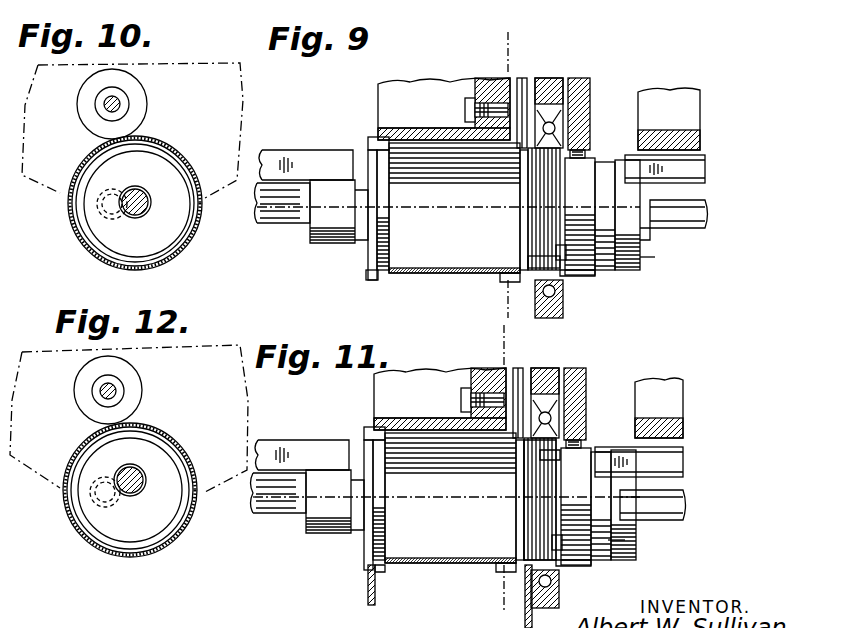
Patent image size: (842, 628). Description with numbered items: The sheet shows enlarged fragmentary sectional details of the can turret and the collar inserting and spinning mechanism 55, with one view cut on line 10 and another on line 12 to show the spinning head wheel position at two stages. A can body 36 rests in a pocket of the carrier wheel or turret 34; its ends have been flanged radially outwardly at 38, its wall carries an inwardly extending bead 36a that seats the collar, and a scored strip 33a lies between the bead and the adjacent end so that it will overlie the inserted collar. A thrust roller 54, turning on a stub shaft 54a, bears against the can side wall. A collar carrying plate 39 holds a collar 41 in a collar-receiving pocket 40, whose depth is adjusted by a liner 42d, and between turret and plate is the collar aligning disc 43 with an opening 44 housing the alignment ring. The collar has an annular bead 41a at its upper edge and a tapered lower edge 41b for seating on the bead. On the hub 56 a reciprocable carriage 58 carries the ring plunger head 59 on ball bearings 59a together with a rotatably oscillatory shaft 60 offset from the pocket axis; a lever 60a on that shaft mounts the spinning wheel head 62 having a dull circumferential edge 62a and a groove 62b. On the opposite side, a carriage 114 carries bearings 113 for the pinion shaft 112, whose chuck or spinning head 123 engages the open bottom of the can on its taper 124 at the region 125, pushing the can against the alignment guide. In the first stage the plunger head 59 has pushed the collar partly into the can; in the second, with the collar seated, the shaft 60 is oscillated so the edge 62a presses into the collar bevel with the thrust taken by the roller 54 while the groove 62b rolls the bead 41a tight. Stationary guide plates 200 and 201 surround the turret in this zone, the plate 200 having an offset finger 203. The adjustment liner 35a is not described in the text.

In FIG. 9, the section line 10 is at (474, 50).
In FIG. 11, the section line 12 is at (472, 343).
In FIG. 9, the scored strip 33a is at (454, 165).
In FIG. 10, the carrier wheel or turret 34 is at (243, 103).
In FIG. 12, the carrier wheel or turret 34 is at (246, 402).
In FIG. 9, the carrier wheel or turret 34 is at (503, 78).
In FIG. 11, the carrier wheel or turret 34 is at (499, 368).
In FIG. 9, the liner 35a is at (402, 135).
In FIG. 11, the liner 35a is at (418, 425).
In FIG. 10, the can body 36 is at (185, 247).
In FIG. 12, the can body 36 is at (190, 522).
In FIG. 9, the can body 36 is at (426, 274).
In FIG. 11, the can body 36 is at (422, 565).
In FIG. 9, the inwardly extending bead 36a is at (505, 282).
In FIG. 11, the inwardly extending bead 36a is at (503, 572).
In FIG. 9, the flanged end 38 is at (378, 280).
In FIG. 9, the collar carrying plate 39 is at (578, 80).
In FIG. 11, the collar carrying plate 39 is at (578, 368).
In FIG. 9, the collar-receiving pocket 40 is at (585, 152).
In FIG. 9, the collar 41 is at (565, 275).
In FIG. 9, the annular bead 41a is at (600, 165).
In FIG. 11, the annular bead 41a is at (540, 455).
In FIG. 9, the tapered lower edge 41b is at (560, 250).
In FIG. 11, the tapered lower edge 41b is at (528, 543).
In FIG. 9, the liner 42d is at (585, 150).
In FIG. 11, the liner 42d is at (588, 422).
In FIG. 9, the collar aligning disc 43 is at (548, 80).
In FIG. 11, the collar aligning disc 43 is at (548, 368).
In FIG. 9, the opening 44 is at (563, 315).
In FIG. 11, the opening 44 is at (560, 605).
In FIG. 10, the thrust roller 54 is at (137, 92).
In FIG. 12, the thrust roller 54 is at (130, 378).
In FIG. 9, the thrust roller 54 is at (522, 80).
In FIG. 11, the thrust roller 54 is at (520, 368).
In FIG. 10, the stub shaft 54a is at (120, 106).
In FIG. 12, the stub shaft 54a is at (118, 394).
In FIG. 9, the stub shaft 54a is at (466, 110).
In FIG. 9, the collar inserting and spinning mechanism 55 is at (641, 257).
In FIG. 11, the collar inserting and spinning mechanism 55 is at (609, 541).
In FIG. 9, the hub 56 is at (702, 138).
In FIG. 11, the hub 56 is at (655, 388).
In FIG. 9, the reciprocable carriage 58 is at (700, 172).
In FIG. 11, the reciprocable carriage 58 is at (670, 463).
In FIG. 9, the ring plunger head 59 is at (605, 275).
In FIG. 11, the ring plunger head 59 is at (572, 563).
In FIG. 9, the ball bearings 59a is at (642, 236).
In FIG. 10, the rotatably oscillatory shaft 60 is at (100, 210).
In FIG. 12, the rotatably oscillatory shaft 60 is at (95, 502).
In FIG. 9, the rotatably oscillatory shaft 60 is at (705, 210).
In FIG. 11, the rotatably oscillatory shaft 60 is at (650, 510).
In FIG. 10, the lever 60a is at (122, 222).
In FIG. 12, the lever 60a is at (125, 505).
In FIG. 11, the lever 60a is at (546, 478).
In FIG. 10, the spinning wheel head 62 is at (180, 216).
In FIG. 12, the spinning wheel head 62 is at (163, 470).
In FIG. 9, the spinning wheel head 62 is at (530, 205).
In FIG. 11, the spinning wheel head 62 is at (546, 505).
In FIG. 9, the dull circumferential edge 62a is at (530, 262).
In FIG. 9, the groove 62b is at (528, 183).
In FIG. 9, the pinion shaft 112 is at (276, 226).
In FIG. 11, the pinion shaft 112 is at (280, 515).
In FIG. 9, the bearing 113 is at (340, 243).
In FIG. 11, the bearing 113 is at (308, 533).
In FIG. 9, the carriage 114 is at (285, 157).
In FIG. 11, the carriage 114 is at (300, 447).
In FIG. 9, the chuck or spinning head 123 is at (380, 152).
In FIG. 11, the chuck or spinning head 123 is at (375, 548).
In FIG. 9, the taper 124 is at (372, 150).
In FIG. 11, the taper 124 is at (368, 445).
In FIG. 9, the engagement of chuck with can end 125 is at (370, 137).
In FIG. 11, the engagement of chuck with can end 125 is at (366, 427).
In FIG. 11, the guide plate 200 is at (378, 598).
In FIG. 11, the guide plate 201 is at (525, 610).
In FIG. 11, the offset finger 203 is at (380, 566).